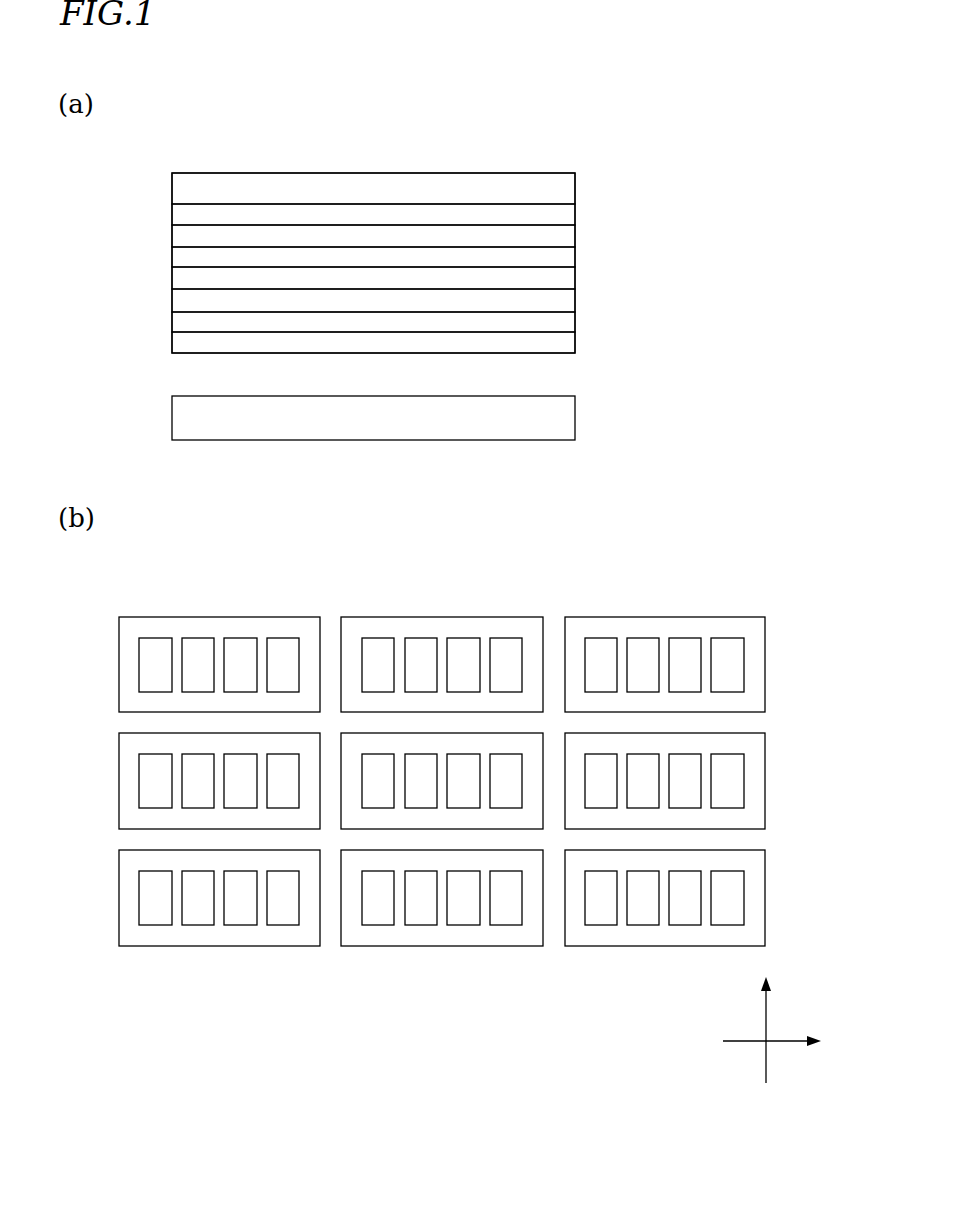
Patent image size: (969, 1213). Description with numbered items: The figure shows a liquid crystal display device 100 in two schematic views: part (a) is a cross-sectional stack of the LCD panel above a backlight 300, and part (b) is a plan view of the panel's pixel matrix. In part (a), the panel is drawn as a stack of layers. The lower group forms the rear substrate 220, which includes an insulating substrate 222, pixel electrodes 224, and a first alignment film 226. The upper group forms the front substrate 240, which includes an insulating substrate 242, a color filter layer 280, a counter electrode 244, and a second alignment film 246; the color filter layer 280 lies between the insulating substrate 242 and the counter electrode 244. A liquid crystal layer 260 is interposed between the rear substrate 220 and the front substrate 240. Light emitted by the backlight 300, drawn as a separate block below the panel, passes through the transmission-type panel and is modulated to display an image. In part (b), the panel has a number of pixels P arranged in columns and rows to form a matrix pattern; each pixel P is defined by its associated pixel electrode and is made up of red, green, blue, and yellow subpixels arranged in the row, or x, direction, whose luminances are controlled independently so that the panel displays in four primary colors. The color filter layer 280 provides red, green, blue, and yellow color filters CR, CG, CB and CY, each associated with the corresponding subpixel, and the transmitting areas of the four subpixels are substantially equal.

The liquid crystal display device 100 is at (695, 114).
The rear substrate 220 is at (608, 341).
The insulating substrate 222 is at (177, 342).
The pixel electrodes 224 is at (177, 320).
The first alignment film 226 is at (177, 302).
The front substrate 240 is at (608, 201).
The insulating substrate 242 is at (177, 185).
The counter electrode 244 is at (177, 236).
The second alignment film 246 is at (177, 256).
The liquid crystal layer 260 is at (565, 280).
The color filter layer 280 is at (177, 213).
The backlight 300 is at (575, 416).
The pixel P is at (105, 671).
The red color filter CR is at (151, 648).
The green color filter CG is at (193, 648).
The blue color filter CB is at (236, 648).
The yellow color filter CY is at (278, 648).